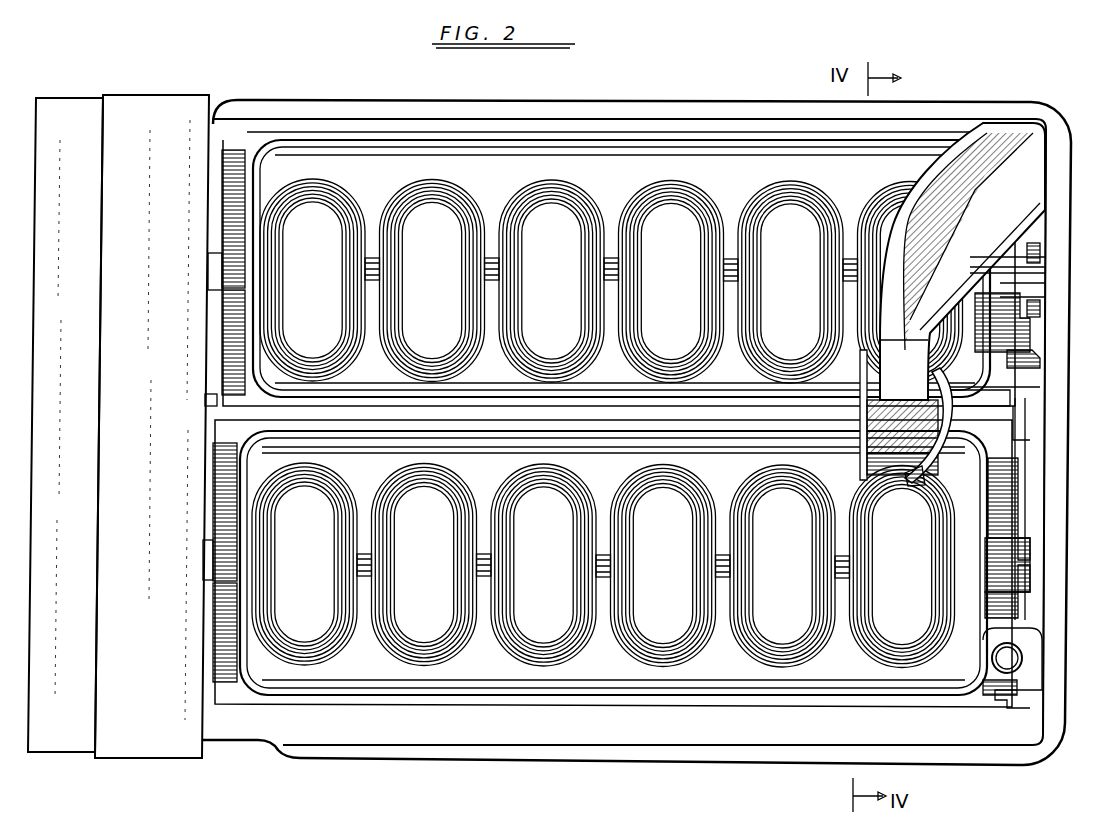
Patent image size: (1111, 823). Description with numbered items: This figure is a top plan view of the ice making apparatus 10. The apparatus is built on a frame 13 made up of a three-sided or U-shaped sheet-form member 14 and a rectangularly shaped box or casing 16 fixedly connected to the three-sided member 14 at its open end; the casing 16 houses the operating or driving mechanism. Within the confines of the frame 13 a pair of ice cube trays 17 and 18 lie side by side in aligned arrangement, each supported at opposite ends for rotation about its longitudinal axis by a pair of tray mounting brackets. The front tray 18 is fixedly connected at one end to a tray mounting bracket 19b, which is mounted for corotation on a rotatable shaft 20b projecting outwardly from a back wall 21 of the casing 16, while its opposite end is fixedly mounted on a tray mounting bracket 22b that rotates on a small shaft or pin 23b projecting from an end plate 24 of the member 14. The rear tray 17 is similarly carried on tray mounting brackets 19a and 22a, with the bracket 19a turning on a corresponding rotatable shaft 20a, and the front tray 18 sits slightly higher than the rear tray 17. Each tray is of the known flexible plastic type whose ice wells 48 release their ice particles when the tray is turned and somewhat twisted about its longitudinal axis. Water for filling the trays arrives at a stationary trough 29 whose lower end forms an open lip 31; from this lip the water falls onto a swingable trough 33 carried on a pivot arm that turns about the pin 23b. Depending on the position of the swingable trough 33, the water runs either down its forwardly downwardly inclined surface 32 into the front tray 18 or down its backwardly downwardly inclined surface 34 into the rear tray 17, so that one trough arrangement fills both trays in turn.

The ice making apparatus 10 is at (1082, 174).
The frame 13 is at (622, 755).
The three-sided or U-shaped sheet-form member 14 is at (1058, 524).
The box or casing 16 is at (76, 108).
The ice cube tray 17 is at (506, 168).
The ice cube tray 18 is at (718, 666).
The tray mounting bracket 19a is at (237, 160).
The tray mounting bracket 19b is at (228, 685).
The rotatable shaft 20a is at (212, 270).
The rotatable shaft 20b is at (208, 552).
The back wall 21 is at (207, 400).
The tray mounting bracket 22a is at (1002, 312).
The tray mounting bracket 22b is at (990, 608).
The small shaft or pin 23b is at (986, 578).
The end plate 24 is at (1066, 366).
The stationary trough 29 is at (997, 130).
The open lip 31 is at (950, 388).
The forwardly downwardly inclined surface 32 is at (905, 442).
The swingable trough 33 is at (930, 476).
The backwardly downwardly inclined surface 34 is at (870, 378).
The ice wells 48 is at (682, 205).